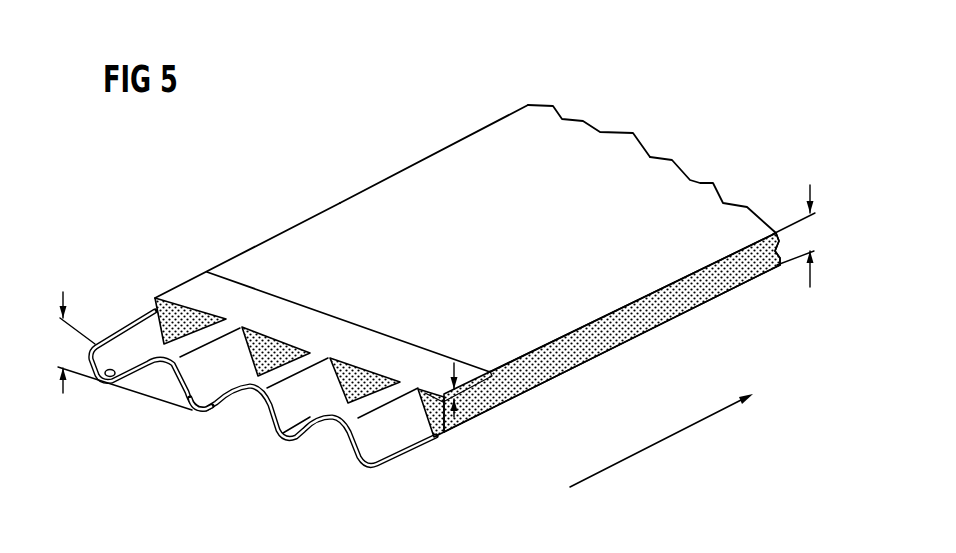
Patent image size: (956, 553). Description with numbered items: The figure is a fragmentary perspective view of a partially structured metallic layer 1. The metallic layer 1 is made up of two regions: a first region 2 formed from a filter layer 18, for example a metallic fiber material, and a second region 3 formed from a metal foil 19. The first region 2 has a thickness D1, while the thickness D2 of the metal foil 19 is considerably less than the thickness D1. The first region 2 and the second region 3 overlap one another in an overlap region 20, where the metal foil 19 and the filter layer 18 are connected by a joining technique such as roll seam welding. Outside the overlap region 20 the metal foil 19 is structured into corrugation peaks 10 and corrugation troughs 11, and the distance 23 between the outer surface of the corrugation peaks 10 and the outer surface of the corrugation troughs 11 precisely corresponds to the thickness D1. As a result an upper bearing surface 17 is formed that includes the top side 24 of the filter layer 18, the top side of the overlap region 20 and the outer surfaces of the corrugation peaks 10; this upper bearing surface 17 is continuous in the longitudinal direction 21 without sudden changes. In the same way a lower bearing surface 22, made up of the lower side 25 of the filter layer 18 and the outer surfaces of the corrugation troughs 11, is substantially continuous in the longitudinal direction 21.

The metallic layer 1 is at (363, 158).
The first region 2 is at (603, 141).
The second region 3 is at (388, 440).
The corrugation peaks 10 is at (362, 406).
The corrugation troughs 11 is at (201, 407).
The upper bearing surface 17 is at (289, 233).
The filter layer 18 is at (718, 290).
The metal foil 19 is at (106, 380).
The overlap region 20 is at (195, 283).
The longitudinal direction 21 is at (658, 443).
The lower bearing surface 22 is at (547, 386).
The distance 23 is at (121, 351).
The top side of the fiber layer 24 is at (704, 195).
The lower side of the fiber layer 25 is at (653, 332).
The thickness of the first region D1 is at (799, 236).
The thickness of the metal foil D2 is at (468, 404).